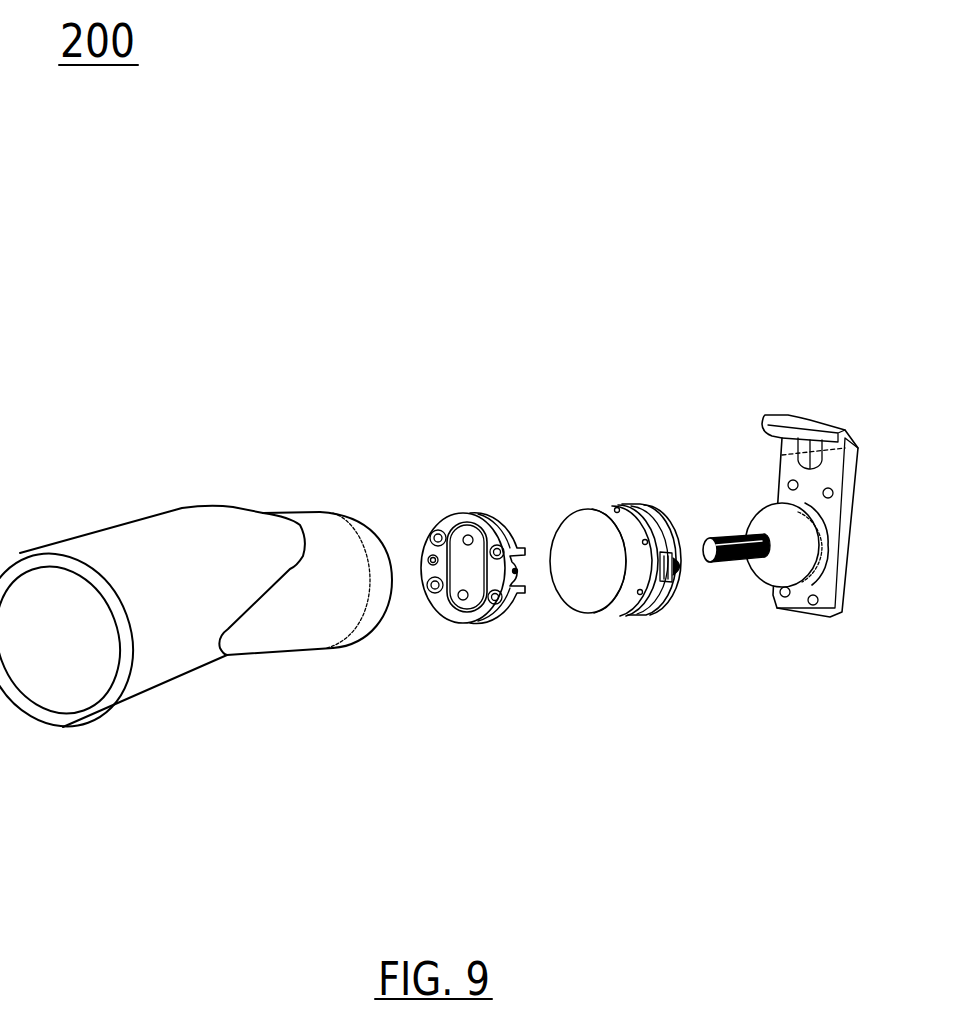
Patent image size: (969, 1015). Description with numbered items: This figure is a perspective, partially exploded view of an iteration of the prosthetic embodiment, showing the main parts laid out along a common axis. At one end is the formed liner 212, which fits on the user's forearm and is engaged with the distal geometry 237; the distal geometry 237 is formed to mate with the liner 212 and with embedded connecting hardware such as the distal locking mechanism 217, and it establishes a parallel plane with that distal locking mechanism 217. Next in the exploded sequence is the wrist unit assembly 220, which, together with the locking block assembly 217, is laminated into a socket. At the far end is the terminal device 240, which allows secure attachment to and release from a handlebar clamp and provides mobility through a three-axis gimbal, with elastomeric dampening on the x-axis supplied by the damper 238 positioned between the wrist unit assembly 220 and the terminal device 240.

The formed liner 212 is at (120, 540).
The distal geometry 237 is at (320, 538).
The distal locking mechanism 217 is at (505, 523).
The wrist unit assembly 220 is at (600, 535).
The damper 238 is at (775, 517).
The terminal device 240 is at (823, 433).